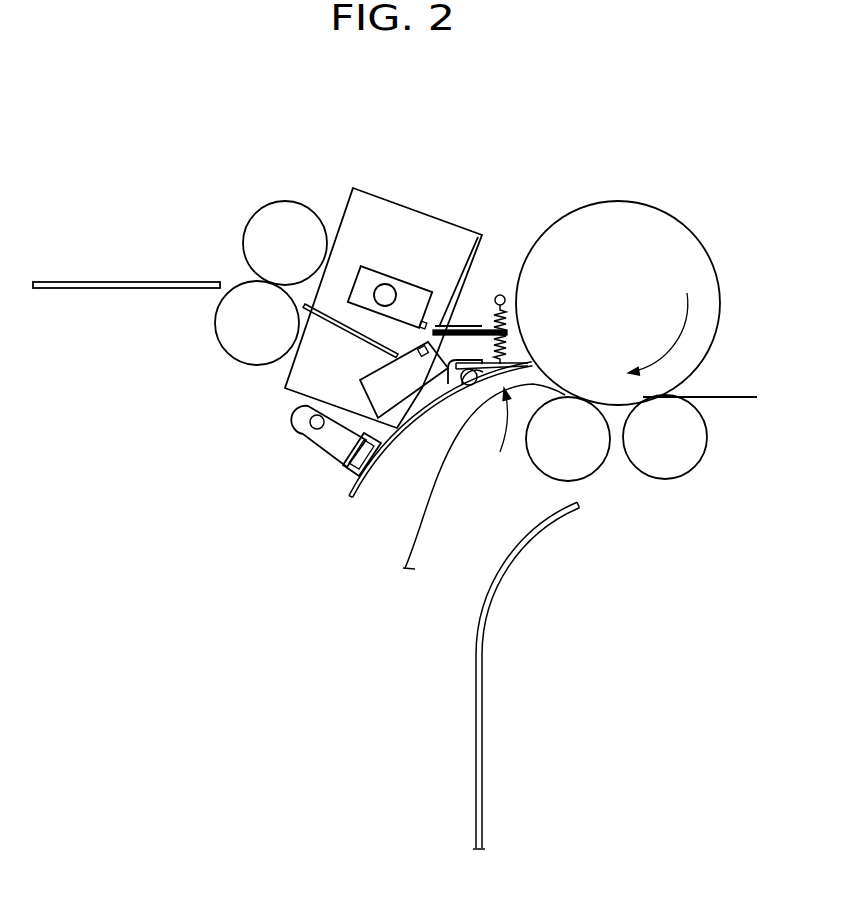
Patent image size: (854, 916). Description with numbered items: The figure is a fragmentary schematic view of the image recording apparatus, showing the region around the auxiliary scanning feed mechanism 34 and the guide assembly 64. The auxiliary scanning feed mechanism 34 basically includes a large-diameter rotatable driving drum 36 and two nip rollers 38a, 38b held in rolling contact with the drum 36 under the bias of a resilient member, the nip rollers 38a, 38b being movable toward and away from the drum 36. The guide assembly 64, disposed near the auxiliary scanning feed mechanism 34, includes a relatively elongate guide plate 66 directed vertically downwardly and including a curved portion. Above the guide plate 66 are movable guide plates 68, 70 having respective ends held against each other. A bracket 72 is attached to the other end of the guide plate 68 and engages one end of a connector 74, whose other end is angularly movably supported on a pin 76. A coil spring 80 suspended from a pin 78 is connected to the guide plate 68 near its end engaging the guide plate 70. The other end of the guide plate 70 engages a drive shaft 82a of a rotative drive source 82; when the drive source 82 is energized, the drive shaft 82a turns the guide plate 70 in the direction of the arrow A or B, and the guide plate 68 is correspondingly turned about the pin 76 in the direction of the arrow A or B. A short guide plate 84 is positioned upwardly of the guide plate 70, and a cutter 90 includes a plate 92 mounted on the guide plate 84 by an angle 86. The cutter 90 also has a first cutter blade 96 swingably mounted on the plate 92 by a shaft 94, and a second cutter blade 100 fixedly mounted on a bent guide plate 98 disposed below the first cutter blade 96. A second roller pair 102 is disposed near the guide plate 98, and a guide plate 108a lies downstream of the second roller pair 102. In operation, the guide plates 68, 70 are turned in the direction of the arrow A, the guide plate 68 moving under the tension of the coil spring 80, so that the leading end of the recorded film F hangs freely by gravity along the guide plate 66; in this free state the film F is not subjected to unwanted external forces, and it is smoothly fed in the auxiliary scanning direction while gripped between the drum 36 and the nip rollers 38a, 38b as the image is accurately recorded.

The auxiliary scanning feed mechanism 34 is at (658, 152).
The driving drum 36 is at (673, 240).
The nip roller 38a is at (682, 465).
The nip roller 38b is at (583, 465).
The guide assembly 64 is at (522, 165).
The guide plate 66 is at (482, 632).
The movable guide plate 68 is at (395, 442).
The movable guide plate 70 is at (480, 360).
The bracket 72 is at (345, 490).
The connector 74 is at (330, 437).
The pin 76 is at (310, 420).
The pin 78 is at (508, 318).
The coil spring 80 is at (503, 313).
The rotative drive source 82 is at (478, 390).
The drive shaft 82a is at (462, 393).
The short guide plate 84 is at (500, 295).
The angle 86 is at (470, 252).
The cutter 90 is at (405, 150).
The plate 92 is at (364, 192).
The shaft 94 is at (387, 292).
The first cutter blade 96 is at (366, 277).
The bent guide plate 98 is at (334, 324).
The second cutter blade 100 is at (368, 397).
The second roller pair 102 is at (280, 217).
The guide plate 108a is at (135, 288).
The film F is at (422, 530).
The arrow A is at (497, 417).
The arrow B is at (490, 455).